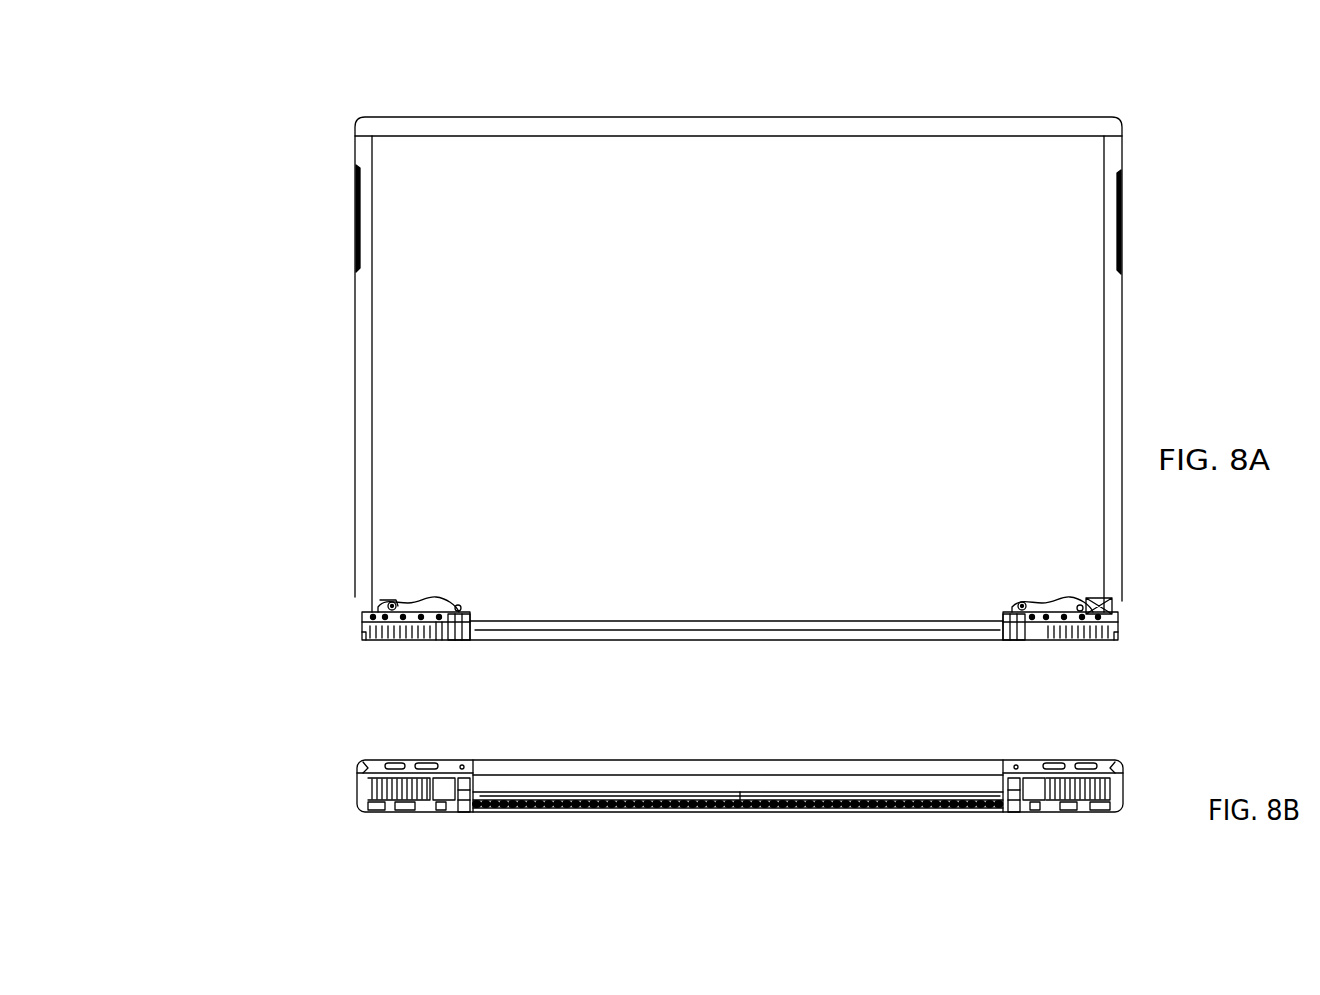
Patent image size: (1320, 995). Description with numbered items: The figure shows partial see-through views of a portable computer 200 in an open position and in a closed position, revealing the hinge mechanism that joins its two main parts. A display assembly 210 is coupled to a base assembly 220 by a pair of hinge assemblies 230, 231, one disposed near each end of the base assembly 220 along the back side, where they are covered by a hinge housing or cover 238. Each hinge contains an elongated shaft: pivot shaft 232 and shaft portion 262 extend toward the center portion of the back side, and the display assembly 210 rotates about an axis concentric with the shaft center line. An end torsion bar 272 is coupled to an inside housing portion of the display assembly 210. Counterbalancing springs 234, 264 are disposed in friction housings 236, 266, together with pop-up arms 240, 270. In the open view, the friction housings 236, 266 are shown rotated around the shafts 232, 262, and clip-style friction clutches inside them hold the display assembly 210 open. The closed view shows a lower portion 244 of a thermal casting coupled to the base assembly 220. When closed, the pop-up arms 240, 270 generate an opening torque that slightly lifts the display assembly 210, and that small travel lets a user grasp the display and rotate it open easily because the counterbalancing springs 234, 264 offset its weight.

In FIG. 8A, the portable computer 200 is at (390, 74).
In FIG. 8B, the portable computer 200 is at (268, 757).
In FIG. 8A, the display assembly 210 is at (586, 132).
In FIG. 8B, the base assembly 220 is at (797, 810).
In FIG. 8A, the hinge assembly 230 is at (374, 648).
In FIG. 8B, the hinge assembly 230 is at (344, 806).
In FIG. 8A, the hinge assembly 231 is at (1163, 656).
In FIG. 8B, the hinge assembly 231 is at (1138, 810).
In FIG. 8A, the elongated pivot shaft 232 is at (474, 640).
In FIG. 8B, the elongated pivot shaft 232 is at (473, 812).
In FIG. 8A, the counterbalancing spring 234 is at (402, 642).
In FIG. 8B, the counterbalancing spring 234 is at (360, 812).
In FIG. 8A, the friction housing 236 is at (438, 642).
In FIG. 8A, the hinge housing or cover 238 is at (822, 640).
In FIG. 8B, the hinge housing or cover 238 is at (657, 802).
In FIG. 8A, the pop-up arm 240 is at (455, 642).
In FIG. 8B, the pop-up arm 240 is at (451, 812).
In FIG. 8B, the lower portion of thermal casting 244 is at (401, 812).
In FIG. 8A, the elongated shaft portion 262 is at (1008, 636).
In FIG. 8B, the elongated shaft portion 262 is at (1010, 806).
In FIG. 8A, the counterbalancing spring 264 is at (1100, 642).
In FIG. 8B, the counterbalancing spring 264 is at (1100, 812).
In FIG. 8A, the friction housing 266 is at (1034, 642).
In FIG. 8A, the pop-up arm 270 is at (1013, 642).
In FIG. 8B, the pop-up arm 270 is at (1013, 812).
In FIG. 8A, the end torsion bar 272 is at (1104, 602).